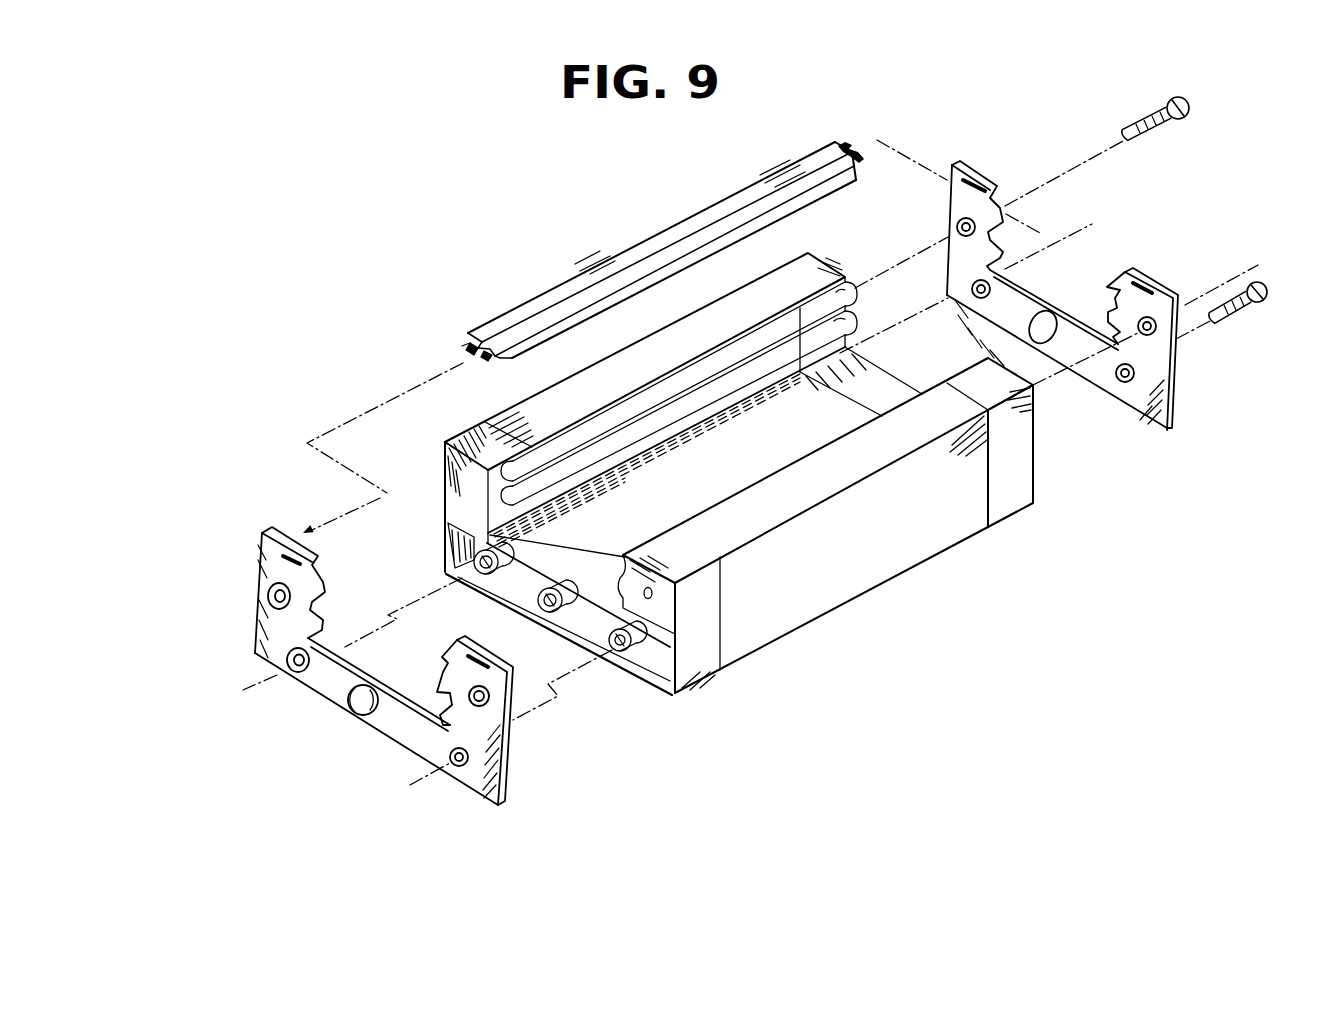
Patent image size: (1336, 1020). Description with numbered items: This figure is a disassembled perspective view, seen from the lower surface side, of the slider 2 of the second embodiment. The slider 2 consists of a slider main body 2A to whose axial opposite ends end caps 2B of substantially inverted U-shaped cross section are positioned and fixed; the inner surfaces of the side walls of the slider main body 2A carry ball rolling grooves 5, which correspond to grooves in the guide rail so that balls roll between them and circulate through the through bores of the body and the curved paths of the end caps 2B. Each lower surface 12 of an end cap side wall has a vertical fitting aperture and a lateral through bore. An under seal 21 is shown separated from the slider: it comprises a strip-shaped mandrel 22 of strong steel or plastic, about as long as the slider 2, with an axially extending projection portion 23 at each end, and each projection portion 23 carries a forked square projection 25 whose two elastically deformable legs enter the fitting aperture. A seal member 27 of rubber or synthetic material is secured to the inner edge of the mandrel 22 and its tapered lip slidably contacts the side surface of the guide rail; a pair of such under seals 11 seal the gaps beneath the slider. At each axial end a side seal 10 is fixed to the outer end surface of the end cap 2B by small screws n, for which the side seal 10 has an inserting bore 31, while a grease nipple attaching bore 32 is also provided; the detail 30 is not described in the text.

The slider 2 is at (739, 511).
The slider main body 2A is at (790, 590).
The end cap 2B is at (587, 636).
The ball rolling grooves 5 is at (656, 428).
The side seal 10 is at (701, 520).
The under seal 11 is at (918, 150).
The lower surface 12 is at (832, 460).
The under seal 21 is at (605, 244).
The mandrel 22 is at (501, 327).
The projection portion 23 is at (460, 331).
The square projection 25 is at (460, 347).
The seal member 27 is at (782, 206).
The bracket tab 30 is at (262, 556).
The inserting bore 31 is at (288, 658).
The grease nipple attaching bore 32 is at (362, 708).
The small screw n is at (1236, 318).